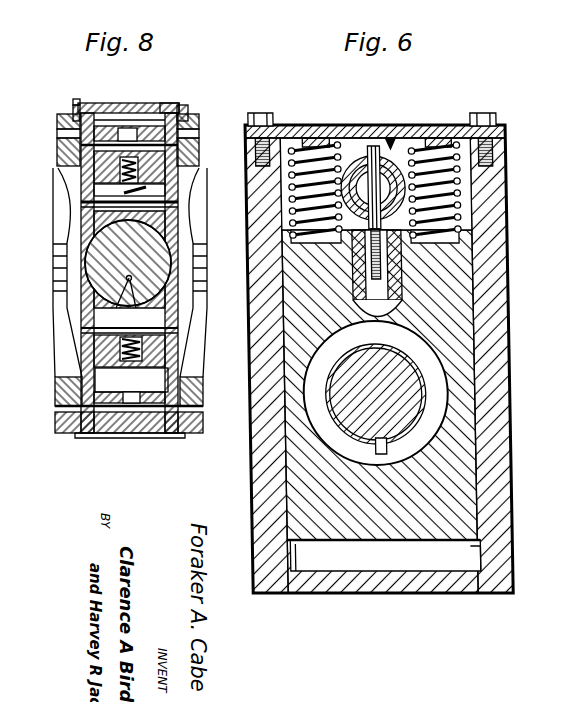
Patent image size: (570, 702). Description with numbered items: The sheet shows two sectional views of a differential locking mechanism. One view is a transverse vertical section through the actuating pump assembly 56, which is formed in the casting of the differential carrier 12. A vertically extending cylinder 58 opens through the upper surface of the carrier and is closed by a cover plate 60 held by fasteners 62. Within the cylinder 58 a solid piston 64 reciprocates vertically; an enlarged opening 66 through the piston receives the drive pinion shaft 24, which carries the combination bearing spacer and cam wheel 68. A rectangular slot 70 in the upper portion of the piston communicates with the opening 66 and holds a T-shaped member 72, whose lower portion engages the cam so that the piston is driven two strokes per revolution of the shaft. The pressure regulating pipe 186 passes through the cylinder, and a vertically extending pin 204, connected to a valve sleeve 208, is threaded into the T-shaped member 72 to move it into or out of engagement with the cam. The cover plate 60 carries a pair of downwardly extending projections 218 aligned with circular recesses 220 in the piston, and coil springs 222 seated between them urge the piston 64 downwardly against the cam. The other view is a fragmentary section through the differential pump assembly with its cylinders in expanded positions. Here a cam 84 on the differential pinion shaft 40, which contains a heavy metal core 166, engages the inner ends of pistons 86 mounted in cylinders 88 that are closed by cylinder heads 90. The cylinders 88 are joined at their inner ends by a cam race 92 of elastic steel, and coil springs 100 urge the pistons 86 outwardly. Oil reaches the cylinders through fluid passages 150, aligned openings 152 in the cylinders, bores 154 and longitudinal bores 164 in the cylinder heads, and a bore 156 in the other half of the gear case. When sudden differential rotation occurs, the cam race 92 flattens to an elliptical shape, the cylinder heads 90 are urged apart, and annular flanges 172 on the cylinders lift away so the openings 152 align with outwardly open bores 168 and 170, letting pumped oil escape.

In FIG. 6, the differential carrier 12 is at (499, 258).
In FIG. 6, the drive pinion shaft 24 is at (391, 430).
In FIG. 8, the differential pinion shaft 40 is at (108, 300).
In FIG. 6, the actuating pump assembly 56 is at (376, 168).
In FIG. 6, the cylinder 58 is at (455, 202).
In FIG. 6, the cover plate 60 is at (341, 122).
In FIG. 6, the fasteners 62 is at (253, 108).
In FIG. 6, the piston 64 is at (452, 296).
In FIG. 6, the enlarged opening 66 is at (430, 380).
In FIG. 6, the combination bearing spacer and cam wheel 68 is at (402, 340).
In FIG. 6, the slot 70 is at (390, 270).
In FIG. 6, the T-shaped member 72 is at (358, 300).
In FIG. 8, the cam 84 is at (93, 248).
In FIG. 8, the pistons 86 is at (157, 158).
In FIG. 8, the cylinders 88 is at (170, 171).
In FIG. 8, the cylinder heads 90 is at (99, 103).
In FIG. 8, the cam race 92 is at (180, 255).
In FIG. 8, the coil springs 100 is at (157, 183).
In FIG. 8, the fluid passages 150 is at (180, 126).
In FIG. 8, the openings 152 is at (156, 119).
In FIG. 8, the bores 154 is at (94, 427).
In FIG. 8, the bore 156 is at (55, 127).
In FIG. 8, the longitudinal bores 164 is at (127, 405).
In FIG. 8, the heavy metal core 166 is at (128, 300).
In FIG. 8, the outwardly open bore 168 is at (176, 108).
In FIG. 8, the outwardly open bore 170 is at (68, 108).
In FIG. 8, the annular flanges 172 is at (161, 95).
In FIG. 6, the pressure regulating pipe 186 is at (354, 166).
In FIG. 6, the vertically extending pin 204 is at (365, 137).
In FIG. 6, the valve sleeve 208 is at (383, 128).
In FIG. 6, the projections 218 is at (308, 130).
In FIG. 6, the circular recesses 220 is at (310, 234).
In FIG. 8, the coil springs 222 is at (170, 197).
In FIG. 6, the coil springs 222 is at (290, 186).